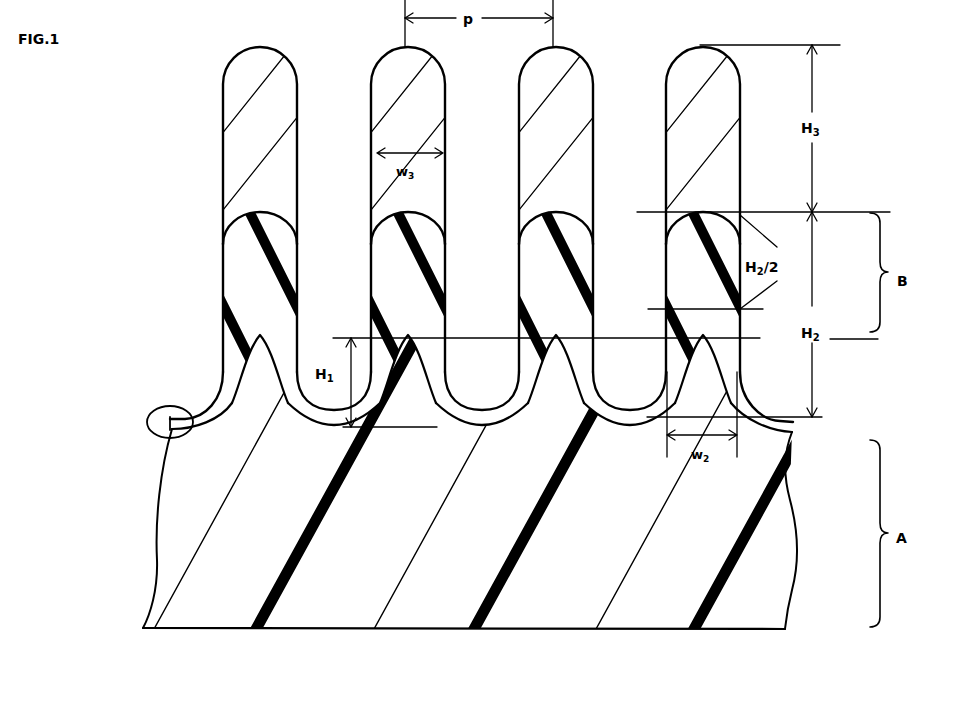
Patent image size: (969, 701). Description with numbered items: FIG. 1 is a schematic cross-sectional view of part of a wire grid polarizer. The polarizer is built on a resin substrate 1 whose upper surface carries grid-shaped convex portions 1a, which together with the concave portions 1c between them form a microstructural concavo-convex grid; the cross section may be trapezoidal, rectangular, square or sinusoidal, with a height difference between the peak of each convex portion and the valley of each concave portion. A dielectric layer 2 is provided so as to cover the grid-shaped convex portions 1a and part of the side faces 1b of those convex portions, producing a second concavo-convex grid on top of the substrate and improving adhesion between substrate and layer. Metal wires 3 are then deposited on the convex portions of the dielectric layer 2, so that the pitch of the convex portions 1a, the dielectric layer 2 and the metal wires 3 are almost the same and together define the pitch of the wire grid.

The resin substrate 1 is at (778, 566).
The grid-shaped convex portions 1a is at (557, 381).
The side faces 1b is at (216, 392).
The concave portions 1c is at (152, 431).
The dielectric layer 2 is at (725, 348).
The metal wires 3 is at (718, 98).